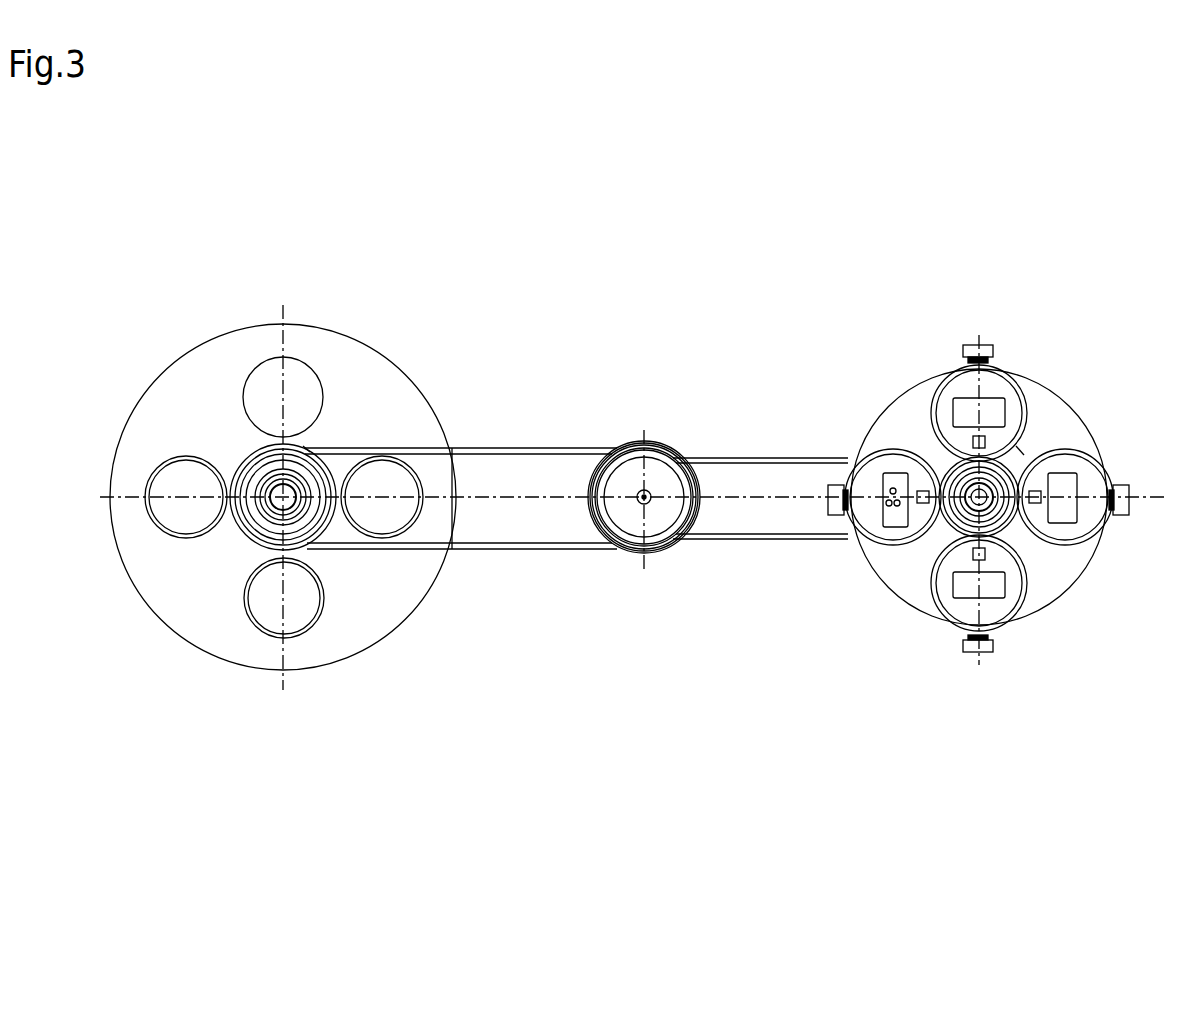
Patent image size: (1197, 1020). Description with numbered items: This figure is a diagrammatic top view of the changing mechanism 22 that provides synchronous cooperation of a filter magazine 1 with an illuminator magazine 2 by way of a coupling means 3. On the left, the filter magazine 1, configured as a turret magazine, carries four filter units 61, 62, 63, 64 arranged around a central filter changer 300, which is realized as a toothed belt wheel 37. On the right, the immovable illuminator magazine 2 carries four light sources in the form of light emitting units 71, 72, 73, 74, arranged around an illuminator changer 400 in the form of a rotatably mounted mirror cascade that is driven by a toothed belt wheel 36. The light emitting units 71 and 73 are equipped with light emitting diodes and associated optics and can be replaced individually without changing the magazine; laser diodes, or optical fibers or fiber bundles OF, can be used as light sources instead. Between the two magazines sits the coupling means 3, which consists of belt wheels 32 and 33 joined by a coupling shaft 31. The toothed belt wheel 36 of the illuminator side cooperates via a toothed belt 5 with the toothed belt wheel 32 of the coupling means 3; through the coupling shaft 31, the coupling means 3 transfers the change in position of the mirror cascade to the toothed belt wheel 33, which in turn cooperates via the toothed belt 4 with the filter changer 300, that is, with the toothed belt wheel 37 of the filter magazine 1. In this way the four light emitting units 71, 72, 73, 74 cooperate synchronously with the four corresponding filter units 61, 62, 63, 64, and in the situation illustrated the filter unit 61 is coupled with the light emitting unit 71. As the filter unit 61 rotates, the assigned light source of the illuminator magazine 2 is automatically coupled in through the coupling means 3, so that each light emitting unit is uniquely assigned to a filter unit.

The filter magazine 1 is at (117, 468).
The illuminator magazine 2 is at (1055, 425).
The coupling means 3 is at (625, 483).
The toothed belt 4 is at (492, 450).
The toothed belt 5 is at (737, 456).
The changing mechanism 22 is at (575, 296).
The coupling shaft 31 is at (646, 494).
The toothed belt wheel 32 is at (660, 545).
The toothed belt wheel 33 is at (605, 545).
The toothed belt wheel 36 is at (950, 540).
The toothed belt wheel 37 is at (252, 540).
The filter unit 61 is at (375, 545).
The filter unit 62 is at (297, 597).
The filter unit 63 is at (176, 508).
The filter unit 64 is at (273, 393).
The light emitting unit 71 is at (878, 510).
The light emitting unit 72 is at (965, 393).
The light emitting unit 73 is at (1067, 507).
The light emitting unit 74 is at (987, 607).
The filter changer 300 is at (312, 441).
The illuminator changer 400 is at (1030, 445).
The optical fiber OF is at (884, 478).